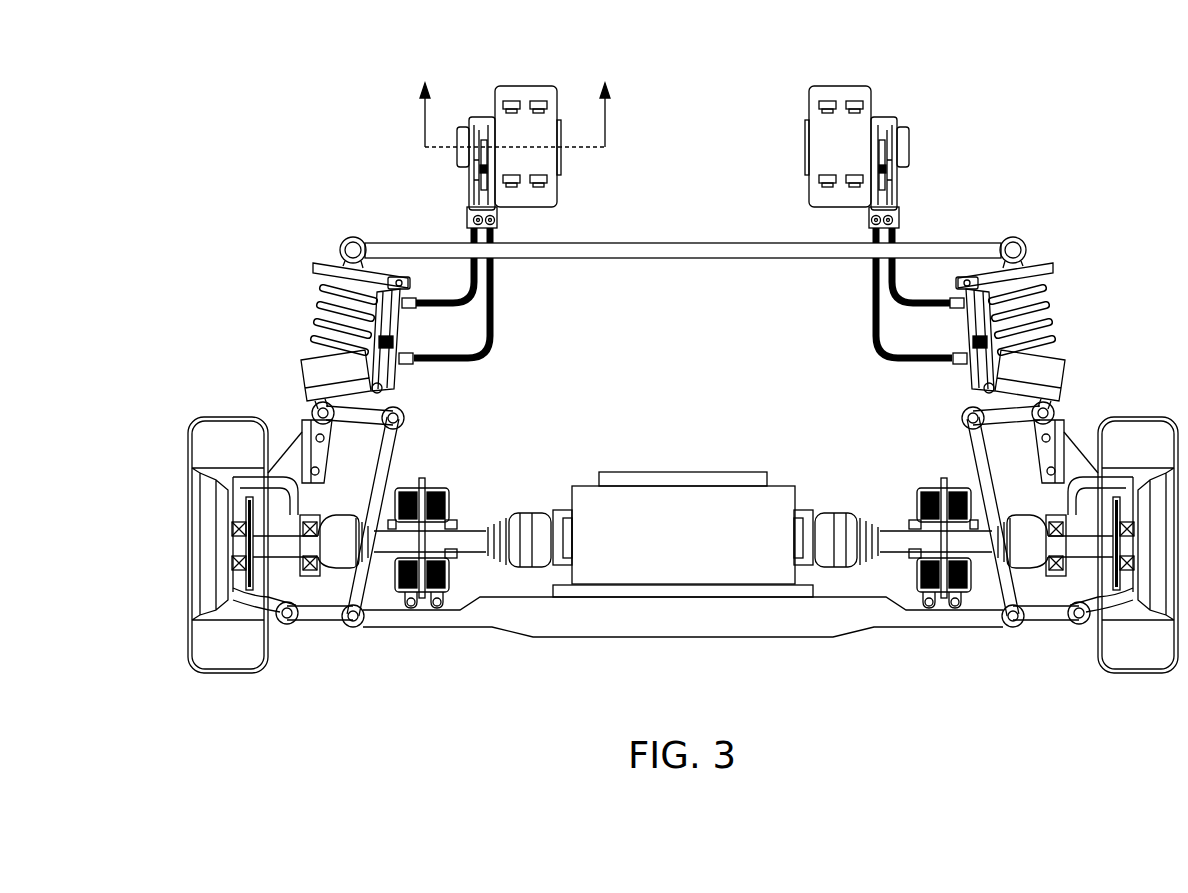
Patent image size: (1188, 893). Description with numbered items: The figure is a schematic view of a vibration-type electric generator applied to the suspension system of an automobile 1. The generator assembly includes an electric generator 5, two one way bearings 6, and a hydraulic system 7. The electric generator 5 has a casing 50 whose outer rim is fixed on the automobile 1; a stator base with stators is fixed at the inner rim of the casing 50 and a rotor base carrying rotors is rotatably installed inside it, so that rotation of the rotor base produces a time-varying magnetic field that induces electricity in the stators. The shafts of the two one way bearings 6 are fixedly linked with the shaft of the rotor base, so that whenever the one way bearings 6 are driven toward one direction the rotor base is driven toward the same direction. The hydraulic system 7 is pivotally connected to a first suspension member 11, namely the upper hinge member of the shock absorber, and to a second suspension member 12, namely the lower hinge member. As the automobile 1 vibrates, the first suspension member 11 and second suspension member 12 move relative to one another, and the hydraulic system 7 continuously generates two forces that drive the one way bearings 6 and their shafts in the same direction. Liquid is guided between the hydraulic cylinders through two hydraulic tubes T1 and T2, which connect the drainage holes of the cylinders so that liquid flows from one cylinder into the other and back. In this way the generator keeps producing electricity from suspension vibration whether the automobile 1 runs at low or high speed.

The automobile 1 is at (268, 170).
The electric generator 5 is at (838, 86).
The casing 50 is at (822, 155).
The one way bearing 6 is at (887, 113).
The hydraulic system 7 is at (972, 276).
The first suspension member 11 is at (1031, 260).
The second suspension member 12 is at (1053, 394).
The hydraulic tube T1 is at (902, 317).
The hydraulic tube T2 is at (905, 370).